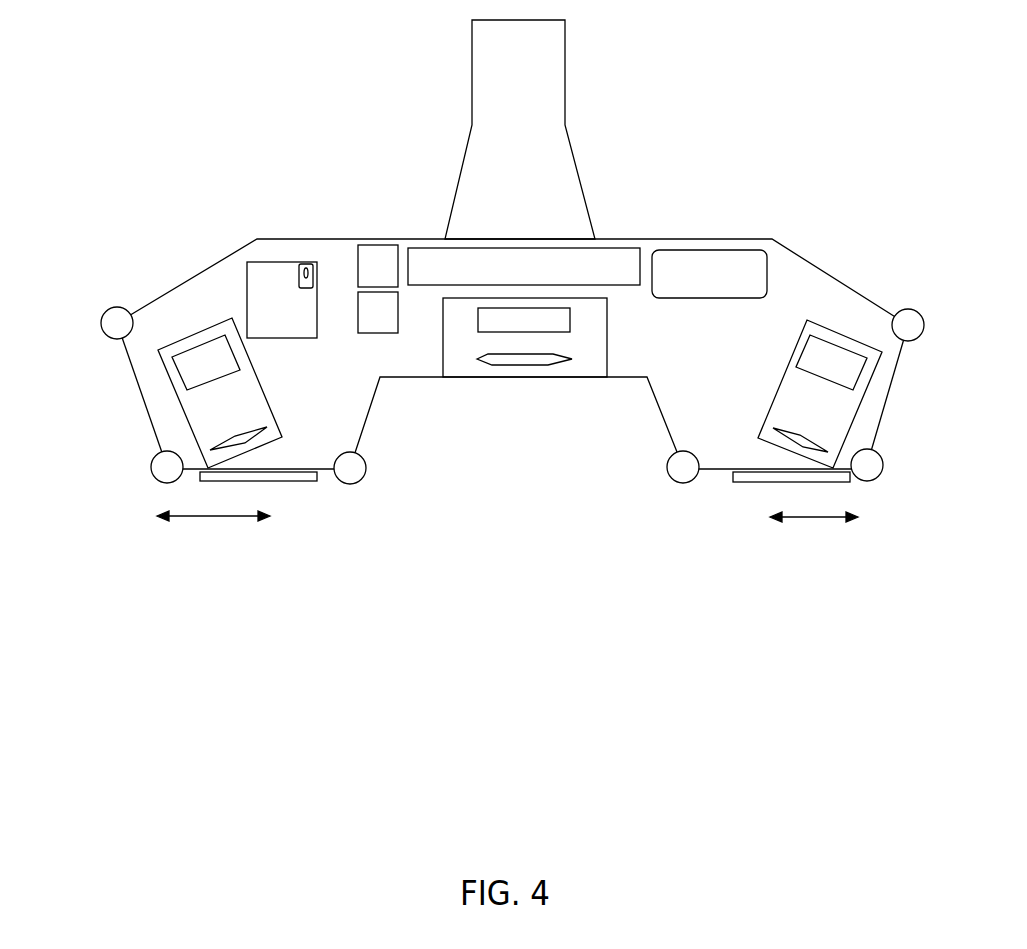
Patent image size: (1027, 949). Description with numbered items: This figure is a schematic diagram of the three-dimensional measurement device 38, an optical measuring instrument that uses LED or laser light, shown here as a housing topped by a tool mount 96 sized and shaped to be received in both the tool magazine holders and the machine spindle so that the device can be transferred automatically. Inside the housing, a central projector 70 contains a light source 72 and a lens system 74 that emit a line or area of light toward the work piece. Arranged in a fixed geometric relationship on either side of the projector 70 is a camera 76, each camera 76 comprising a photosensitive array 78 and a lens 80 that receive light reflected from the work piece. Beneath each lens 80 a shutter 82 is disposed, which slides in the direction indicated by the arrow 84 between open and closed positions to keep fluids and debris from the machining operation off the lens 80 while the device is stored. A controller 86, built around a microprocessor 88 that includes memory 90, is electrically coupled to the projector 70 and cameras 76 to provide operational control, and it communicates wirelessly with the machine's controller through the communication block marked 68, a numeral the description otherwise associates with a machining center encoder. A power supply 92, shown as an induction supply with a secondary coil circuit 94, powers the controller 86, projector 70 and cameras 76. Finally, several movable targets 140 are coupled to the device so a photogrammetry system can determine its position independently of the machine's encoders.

The 3D measurement device 38 is at (148, 178).
The encoder 68 is at (733, 250).
The projector 70 is at (443, 340).
The light source 72 is at (570, 318).
The lens system 74 is at (550, 366).
The camera 76 is at (183, 412).
The photosensitive array 78 is at (218, 338).
The lens 80 is at (252, 432).
The shutter 82 is at (305, 482).
The arrow 84 is at (218, 520).
The controller 86 is at (615, 250).
The microprocessor 88 is at (380, 243).
The memory 90 is at (358, 302).
The power supply 92 is at (247, 273).
The secondary coil circuit 94 is at (300, 265).
The tool mount 96 is at (472, 90).
The movable targets 140 is at (103, 317).